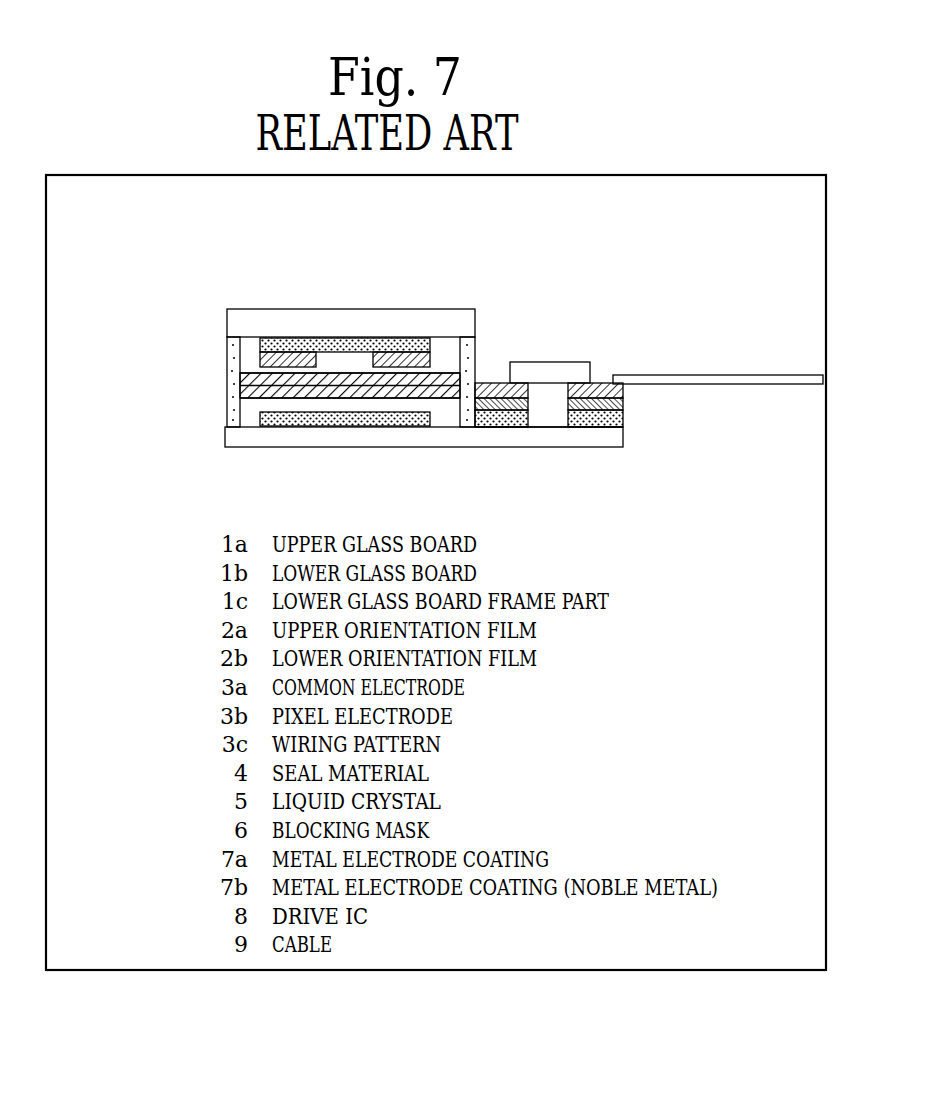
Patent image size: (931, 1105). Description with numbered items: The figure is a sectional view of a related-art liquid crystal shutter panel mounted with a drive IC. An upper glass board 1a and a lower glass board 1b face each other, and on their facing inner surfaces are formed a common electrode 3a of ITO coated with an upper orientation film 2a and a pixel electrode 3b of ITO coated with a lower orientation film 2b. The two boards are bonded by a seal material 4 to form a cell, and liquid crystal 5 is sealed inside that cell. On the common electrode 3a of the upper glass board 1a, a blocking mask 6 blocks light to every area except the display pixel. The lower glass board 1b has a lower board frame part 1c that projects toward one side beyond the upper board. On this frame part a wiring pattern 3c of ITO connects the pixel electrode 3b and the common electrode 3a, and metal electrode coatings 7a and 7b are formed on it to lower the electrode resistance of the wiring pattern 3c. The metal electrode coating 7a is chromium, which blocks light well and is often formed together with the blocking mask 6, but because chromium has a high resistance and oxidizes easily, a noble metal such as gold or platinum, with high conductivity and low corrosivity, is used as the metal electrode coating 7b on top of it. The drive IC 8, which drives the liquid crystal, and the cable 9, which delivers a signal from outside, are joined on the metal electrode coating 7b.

The upper glass board 1a is at (263, 309).
The lower glass board 1b is at (268, 440).
The lower board frame part 1c is at (600, 263).
The upper orientation film 2a is at (250, 357).
The lower orientation film 2b is at (235, 412).
The common electrode 3a is at (302, 338).
The pixel electrode 3b is at (317, 424).
The wiring pattern 3c is at (487, 420).
The seal material 4 is at (230, 373).
The liquid crystal 5 is at (240, 385).
The blocking mask 6 is at (320, 352).
The metal electrode coating 7a is at (623, 405).
The metal electrode coating 7b is at (603, 383).
The drive IC 8 is at (550, 362).
The cable 9 is at (725, 375).